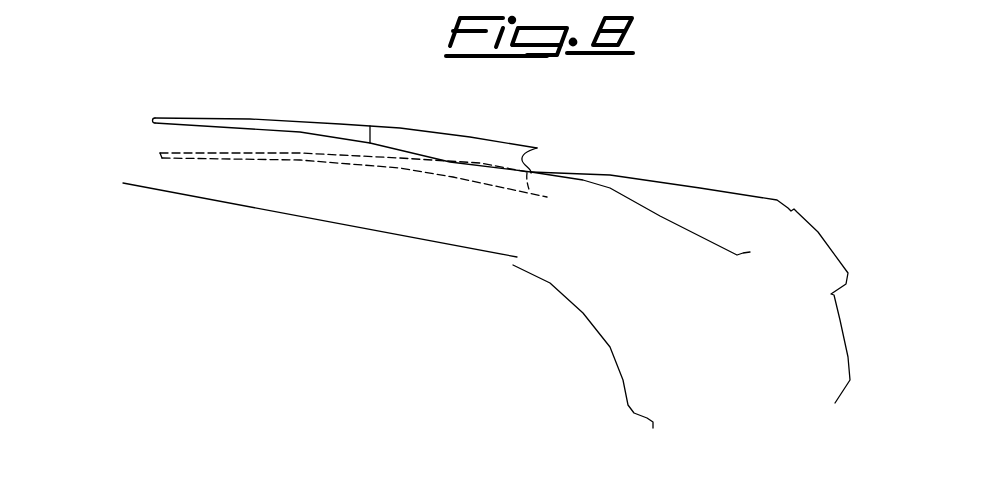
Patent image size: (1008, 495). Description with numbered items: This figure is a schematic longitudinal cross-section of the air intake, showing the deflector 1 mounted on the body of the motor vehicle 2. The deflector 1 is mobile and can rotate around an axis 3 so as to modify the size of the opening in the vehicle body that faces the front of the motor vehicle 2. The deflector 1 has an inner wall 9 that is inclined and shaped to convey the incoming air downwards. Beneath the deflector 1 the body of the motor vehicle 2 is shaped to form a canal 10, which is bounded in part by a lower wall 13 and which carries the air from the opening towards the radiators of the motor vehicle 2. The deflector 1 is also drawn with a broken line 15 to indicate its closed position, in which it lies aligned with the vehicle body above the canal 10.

The deflector 1 is at (470, 137).
The motor vehicle 2 is at (721, 190).
The axis 3 is at (143, 140).
The inner wall 9 is at (370, 126).
The canal 10 is at (430, 218).
The lower wall 13 is at (345, 228).
The broken line 15 is at (277, 160).